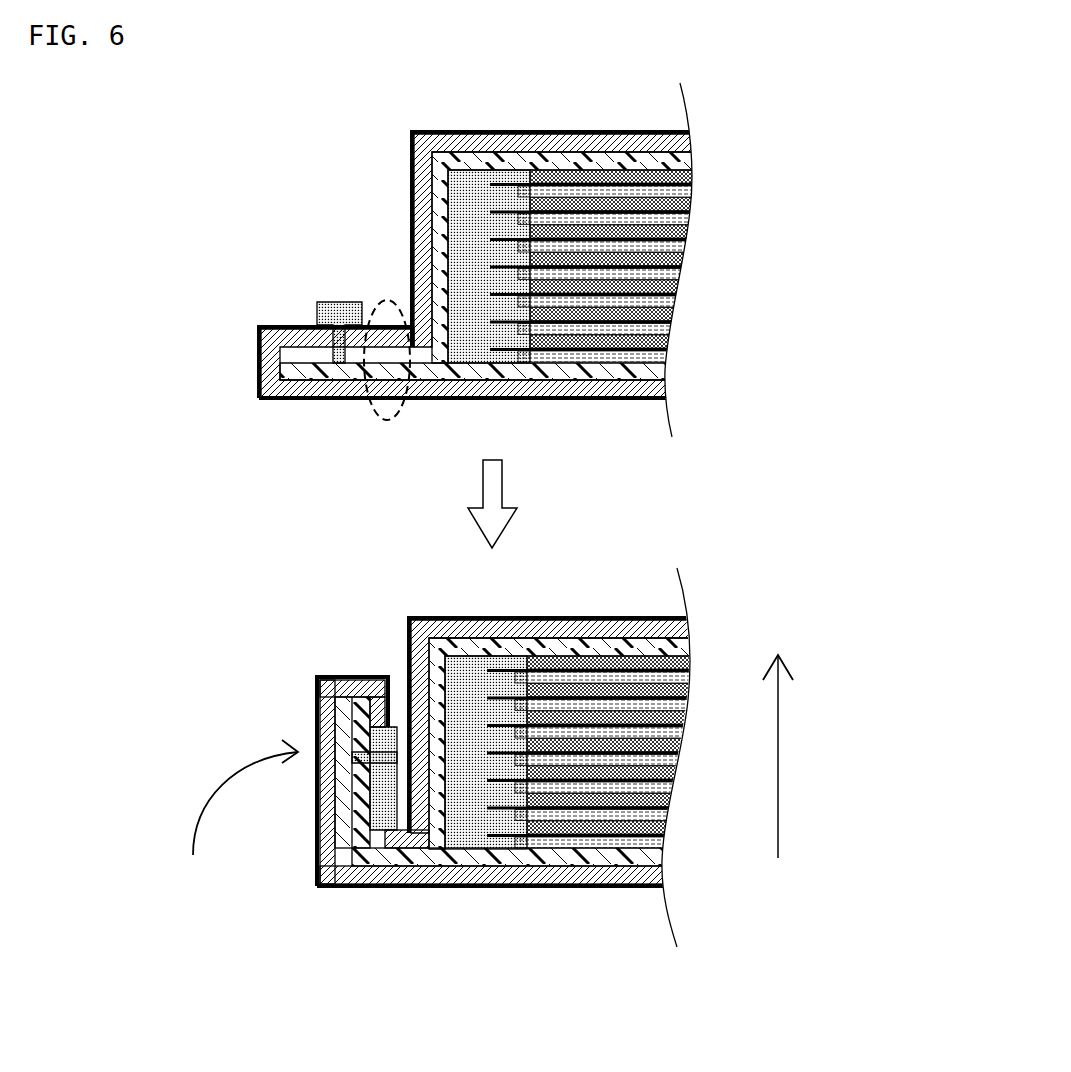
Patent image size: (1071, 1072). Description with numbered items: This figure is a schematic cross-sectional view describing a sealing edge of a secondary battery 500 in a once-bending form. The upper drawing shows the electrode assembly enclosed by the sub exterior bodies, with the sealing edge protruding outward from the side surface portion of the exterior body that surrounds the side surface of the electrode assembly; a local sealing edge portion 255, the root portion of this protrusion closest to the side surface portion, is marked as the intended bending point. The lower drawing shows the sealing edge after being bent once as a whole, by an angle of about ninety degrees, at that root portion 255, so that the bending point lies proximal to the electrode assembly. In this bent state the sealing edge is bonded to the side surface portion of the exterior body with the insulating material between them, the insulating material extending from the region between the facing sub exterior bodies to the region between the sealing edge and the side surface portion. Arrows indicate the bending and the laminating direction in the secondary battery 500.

The local sealing edge portion 255 is at (380, 300).
The secondary battery 500 is at (234, 638).